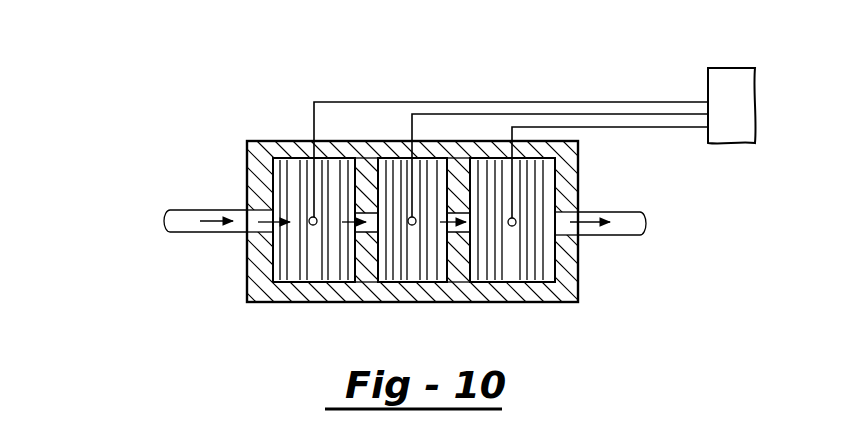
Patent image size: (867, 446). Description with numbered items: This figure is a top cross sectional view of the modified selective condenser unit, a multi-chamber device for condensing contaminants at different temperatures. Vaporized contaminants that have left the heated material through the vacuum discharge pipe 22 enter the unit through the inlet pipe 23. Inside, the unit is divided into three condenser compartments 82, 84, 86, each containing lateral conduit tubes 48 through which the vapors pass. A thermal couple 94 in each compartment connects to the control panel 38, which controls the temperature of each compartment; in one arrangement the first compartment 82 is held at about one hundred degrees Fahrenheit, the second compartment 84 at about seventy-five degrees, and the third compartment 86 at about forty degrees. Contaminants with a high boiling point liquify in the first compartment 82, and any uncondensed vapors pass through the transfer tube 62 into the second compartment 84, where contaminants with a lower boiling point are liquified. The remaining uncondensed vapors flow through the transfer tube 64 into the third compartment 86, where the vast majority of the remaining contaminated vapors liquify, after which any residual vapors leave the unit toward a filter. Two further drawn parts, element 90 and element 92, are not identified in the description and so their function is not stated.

The vacuum discharge pipe 22 is at (630, 211).
The inlet pipe 23 is at (210, 210).
The control panel 38 is at (742, 92).
The lateral conduit tubes 48 is at (337, 270).
The transfer tube 62 is at (371, 212).
The transfer tube 64 is at (462, 290).
The first condenser compartment 82 is at (280, 168).
The second condenser compartment 84 is at (420, 283).
The third condenser compartment 86 is at (553, 275).
The housing 90 is at (257, 284).
The partition wall 92 is at (390, 302).
The thermal couple 94 is at (592, 127).